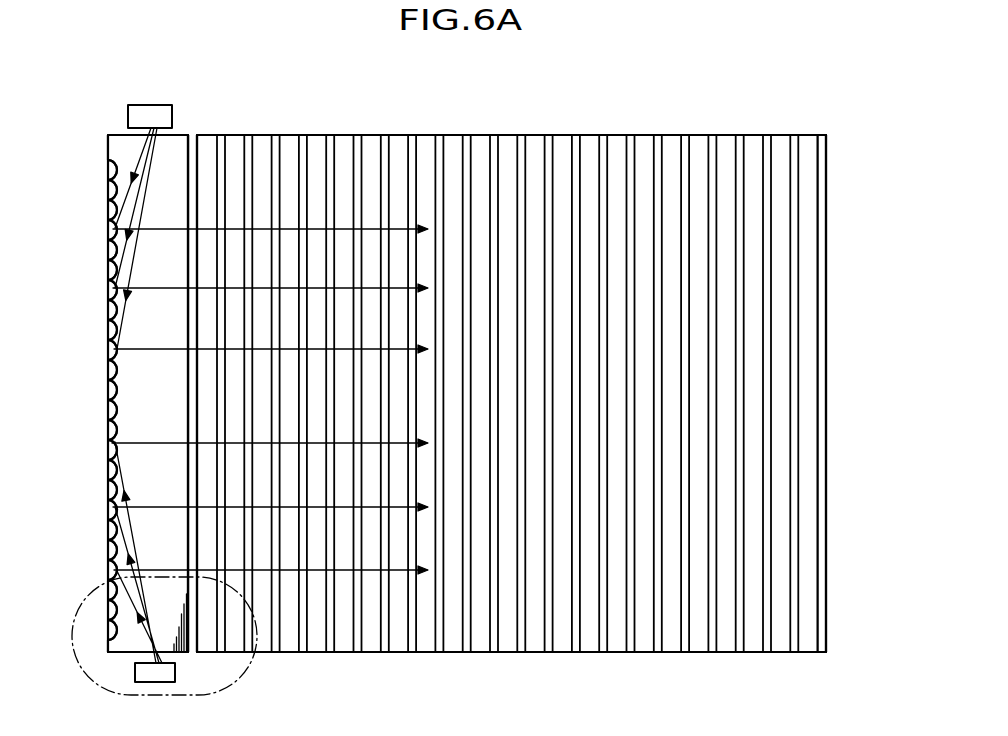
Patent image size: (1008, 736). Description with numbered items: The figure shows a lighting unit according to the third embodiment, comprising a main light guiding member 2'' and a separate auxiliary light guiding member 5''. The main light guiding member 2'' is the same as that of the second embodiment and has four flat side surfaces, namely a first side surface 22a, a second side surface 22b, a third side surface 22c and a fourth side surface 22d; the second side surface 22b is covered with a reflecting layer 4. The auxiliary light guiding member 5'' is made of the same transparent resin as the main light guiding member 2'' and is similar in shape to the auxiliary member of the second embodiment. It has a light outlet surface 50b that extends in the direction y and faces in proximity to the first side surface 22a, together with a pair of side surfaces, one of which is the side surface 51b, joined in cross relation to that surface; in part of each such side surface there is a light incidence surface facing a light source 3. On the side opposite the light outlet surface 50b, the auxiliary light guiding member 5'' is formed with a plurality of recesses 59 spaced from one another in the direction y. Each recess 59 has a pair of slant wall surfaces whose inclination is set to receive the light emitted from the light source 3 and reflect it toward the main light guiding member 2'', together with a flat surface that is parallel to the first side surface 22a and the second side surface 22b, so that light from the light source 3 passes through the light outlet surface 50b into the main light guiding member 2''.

The main light guiding member 2'' is at (511, 353).
The first side surface 22a is at (193, 163).
The second side surface 22b is at (824, 381).
The third side surface 22c is at (530, 133).
The fourth side surface 22d is at (535, 653).
The reflecting layer 4 is at (827, 302).
The auxiliary light guiding member 5'' is at (133, 358).
The recesses 59 is at (111, 263).
The light outlet surface 50b is at (191, 244).
The light source 3 is at (148, 117).
The side surface 51b is at (148, 653).